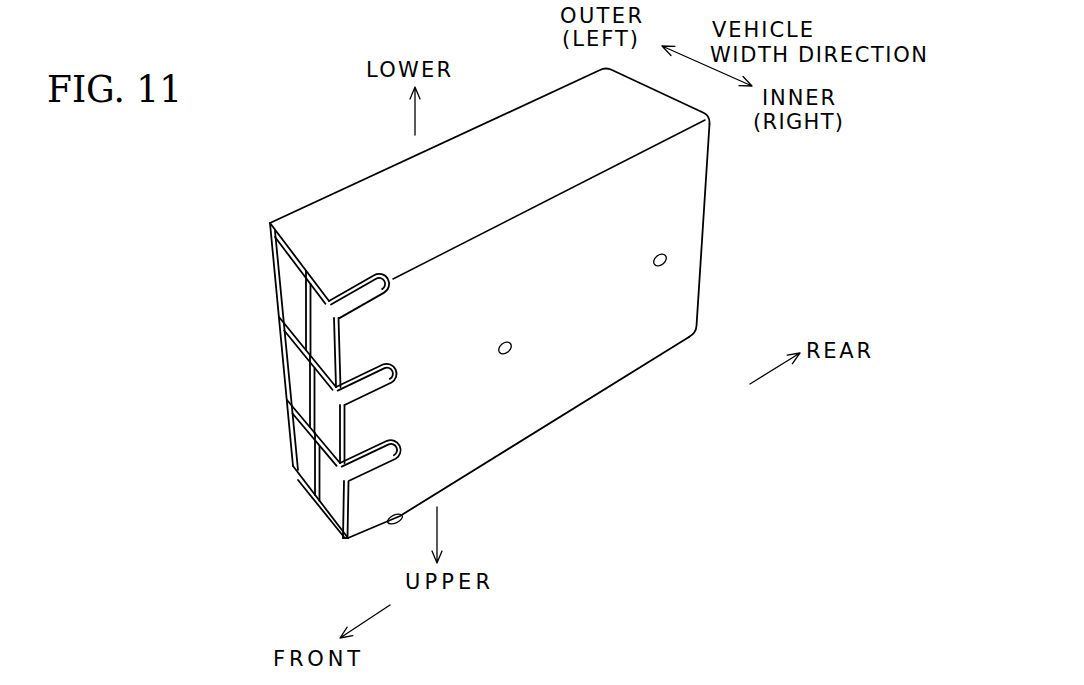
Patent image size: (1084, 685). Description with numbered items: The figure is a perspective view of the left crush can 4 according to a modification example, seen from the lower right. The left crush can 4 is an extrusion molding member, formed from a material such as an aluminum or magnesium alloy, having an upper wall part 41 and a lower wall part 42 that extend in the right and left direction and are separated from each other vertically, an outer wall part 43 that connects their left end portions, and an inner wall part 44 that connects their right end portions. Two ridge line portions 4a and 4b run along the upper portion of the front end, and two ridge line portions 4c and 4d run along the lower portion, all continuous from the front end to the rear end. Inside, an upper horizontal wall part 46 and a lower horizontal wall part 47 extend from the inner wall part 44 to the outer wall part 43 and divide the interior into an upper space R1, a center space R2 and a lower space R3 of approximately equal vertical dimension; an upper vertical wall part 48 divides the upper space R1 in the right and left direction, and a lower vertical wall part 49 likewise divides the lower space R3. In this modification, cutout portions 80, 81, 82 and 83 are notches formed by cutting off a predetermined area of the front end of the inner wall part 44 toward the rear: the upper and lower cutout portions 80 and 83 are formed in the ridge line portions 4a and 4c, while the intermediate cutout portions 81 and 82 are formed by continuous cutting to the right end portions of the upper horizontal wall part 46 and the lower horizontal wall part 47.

The left crush can 4 is at (503, 103).
The ridge line portion 4a is at (298, 480).
The ridge line portion 4b is at (503, 460).
The ridge line portion 4c is at (295, 210).
The ridge line portion 4d is at (660, 143).
The upper wall part 41 is at (330, 530).
The lower wall part 42 is at (458, 175).
The outer wall part 43 is at (276, 291).
The inner wall part 44 is at (590, 372).
The upper horizontal wall part 46 is at (290, 421).
The lower horizontal wall part 47 is at (300, 350).
The upper vertical wall part 48 is at (293, 465).
The lower vertical wall part 49 is at (305, 284).
The cutout portion 80 is at (389, 524).
The cutout portion 81 is at (398, 446).
The cutout portion 82 is at (394, 372).
The cutout portion 83 is at (367, 296).
The upper space R1 is at (338, 490).
The center space R2 is at (310, 400).
The lower space R3 is at (315, 317).